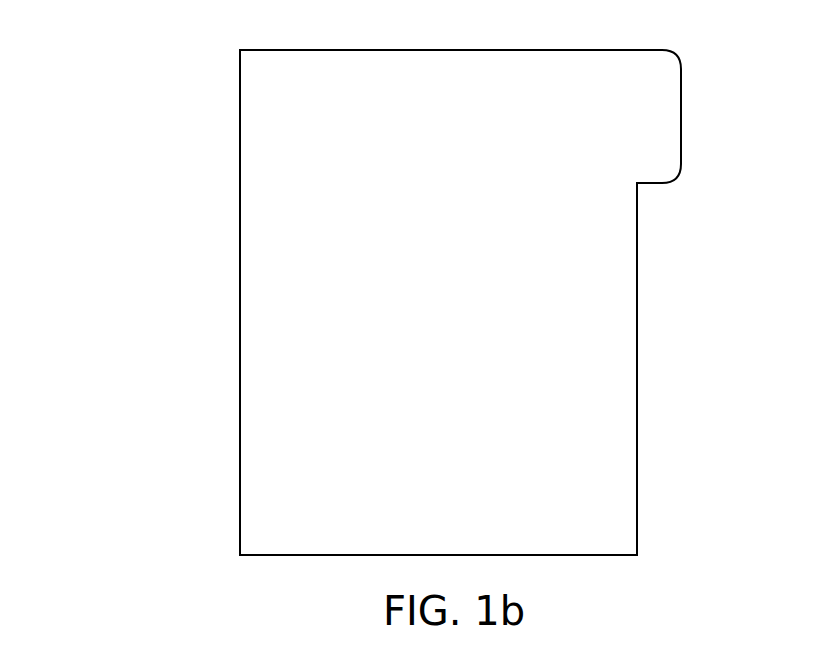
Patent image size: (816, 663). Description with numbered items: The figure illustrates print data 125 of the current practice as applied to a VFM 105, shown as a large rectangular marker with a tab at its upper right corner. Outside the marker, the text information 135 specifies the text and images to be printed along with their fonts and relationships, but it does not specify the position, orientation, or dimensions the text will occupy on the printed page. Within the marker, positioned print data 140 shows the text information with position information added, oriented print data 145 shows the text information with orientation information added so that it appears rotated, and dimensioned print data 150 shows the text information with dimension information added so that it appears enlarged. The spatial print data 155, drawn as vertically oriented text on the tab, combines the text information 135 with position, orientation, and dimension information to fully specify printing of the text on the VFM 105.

The VFM 105 is at (240, 50).
The print data 125 is at (131, 82).
The text information 135 is at (100, 150).
The positioned print data 140 is at (430, 125).
The oriented print data 145 is at (438, 228).
The dimensioned print data 150 is at (405, 298).
The spatial print data 155 is at (672, 60).